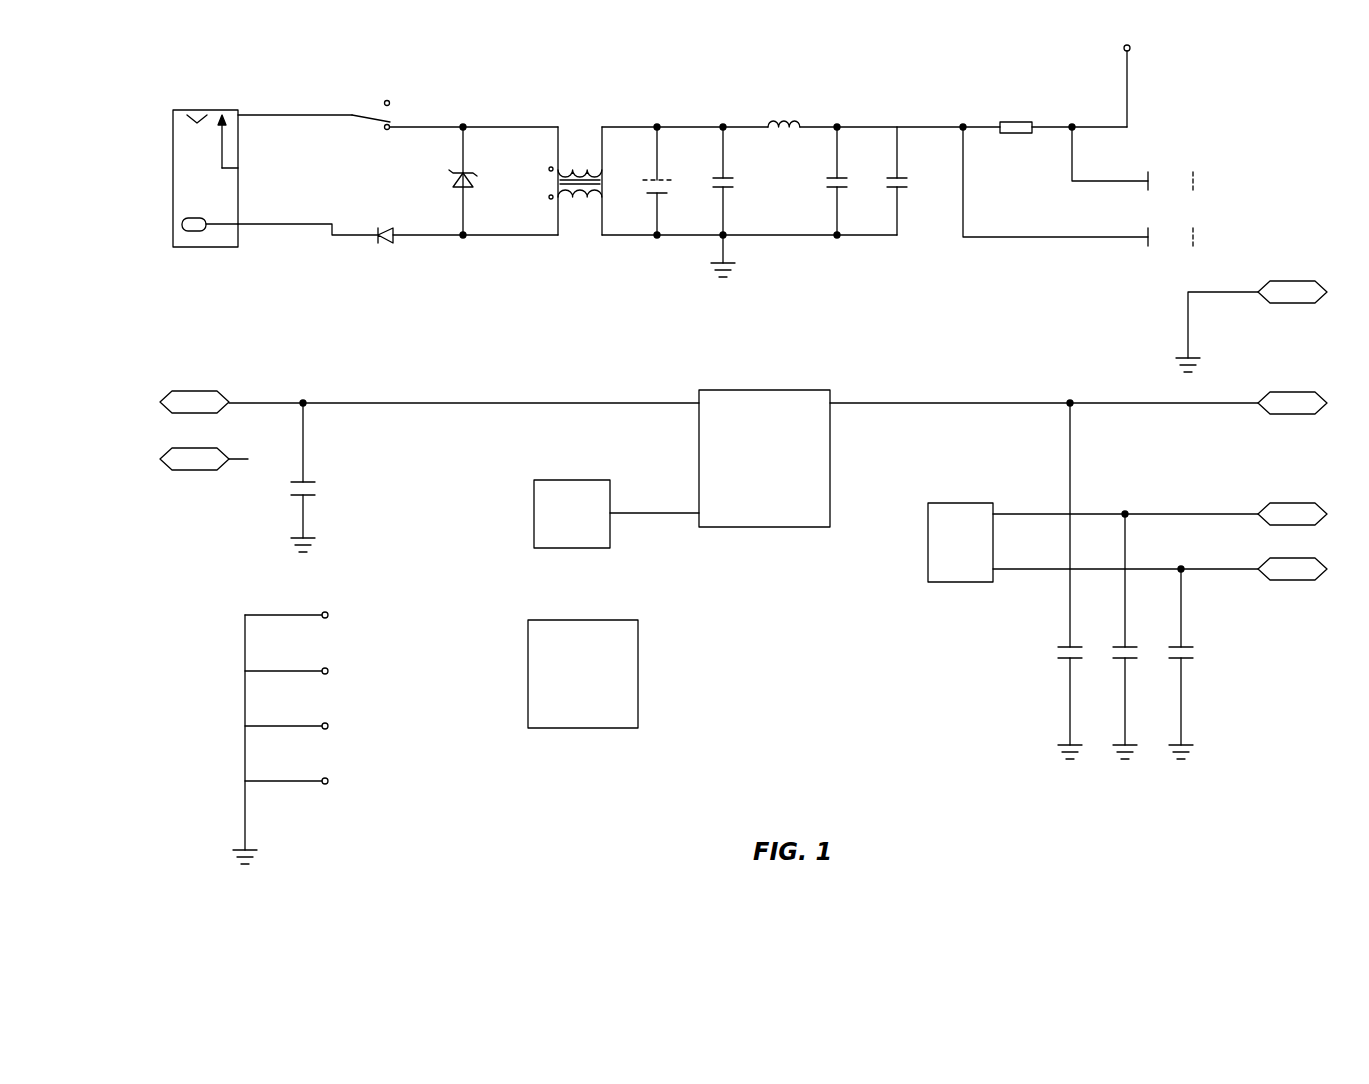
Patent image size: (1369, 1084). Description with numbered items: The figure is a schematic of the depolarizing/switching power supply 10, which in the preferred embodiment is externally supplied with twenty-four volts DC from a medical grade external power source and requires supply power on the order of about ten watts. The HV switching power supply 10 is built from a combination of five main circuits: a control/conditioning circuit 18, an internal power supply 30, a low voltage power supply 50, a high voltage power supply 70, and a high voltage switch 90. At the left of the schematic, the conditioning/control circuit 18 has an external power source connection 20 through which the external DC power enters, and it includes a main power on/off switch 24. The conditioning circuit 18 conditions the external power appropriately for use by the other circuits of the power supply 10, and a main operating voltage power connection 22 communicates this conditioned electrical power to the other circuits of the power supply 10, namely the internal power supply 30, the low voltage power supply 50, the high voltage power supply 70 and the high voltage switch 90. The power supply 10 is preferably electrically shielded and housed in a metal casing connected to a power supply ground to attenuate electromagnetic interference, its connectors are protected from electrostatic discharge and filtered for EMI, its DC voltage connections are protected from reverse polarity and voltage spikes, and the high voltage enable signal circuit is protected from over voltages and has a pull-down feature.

The depolarizing/switching power supply 10 is at (751, 447).
The control/conditioning circuit 18 is at (755, 201).
The external power source connection 20 is at (248, 184).
The main operating voltage power connection 22 is at (1145, 78).
The main power on/off switch 24 is at (355, 121).
The internal power supply 30 is at (553, 678).
The low voltage power supply 50 is at (952, 523).
The high voltage power supply 70 is at (549, 493).
The high voltage switch 90 is at (733, 454).